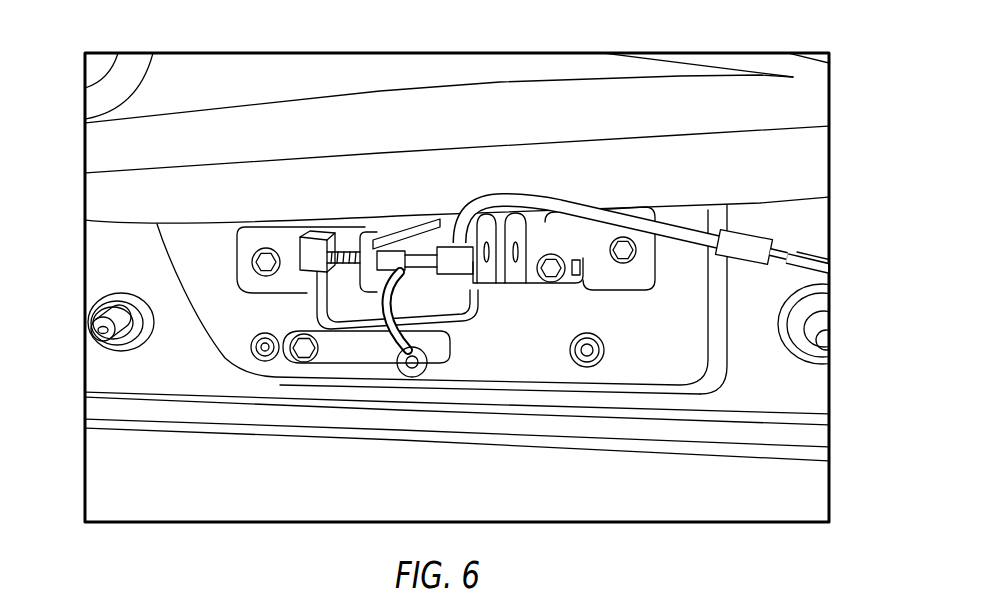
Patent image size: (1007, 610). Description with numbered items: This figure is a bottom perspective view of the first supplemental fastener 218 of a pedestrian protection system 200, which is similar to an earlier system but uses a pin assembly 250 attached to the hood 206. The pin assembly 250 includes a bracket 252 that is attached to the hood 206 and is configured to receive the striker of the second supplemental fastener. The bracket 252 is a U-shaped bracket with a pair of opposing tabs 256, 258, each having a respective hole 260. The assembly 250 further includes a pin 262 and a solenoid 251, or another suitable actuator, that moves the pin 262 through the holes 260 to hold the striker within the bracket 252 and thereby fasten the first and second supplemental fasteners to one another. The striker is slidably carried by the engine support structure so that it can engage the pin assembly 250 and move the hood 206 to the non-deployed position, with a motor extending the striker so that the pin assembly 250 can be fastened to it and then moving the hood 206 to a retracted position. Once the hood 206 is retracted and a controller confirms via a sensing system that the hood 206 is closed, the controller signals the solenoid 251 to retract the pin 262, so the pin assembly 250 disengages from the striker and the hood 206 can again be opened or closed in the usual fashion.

The pedestrian protection system 200 is at (82, 148).
The hood 206 is at (695, 121).
The first supplemental fastener 218 is at (277, 70).
The pin assembly 250 is at (238, 268).
The solenoid 251 is at (421, 222).
The bracket 252 is at (515, 213).
The tab 256 is at (480, 283).
The tab 258 is at (520, 283).
The holes 260 is at (510, 215).
The pin 262 is at (425, 275).